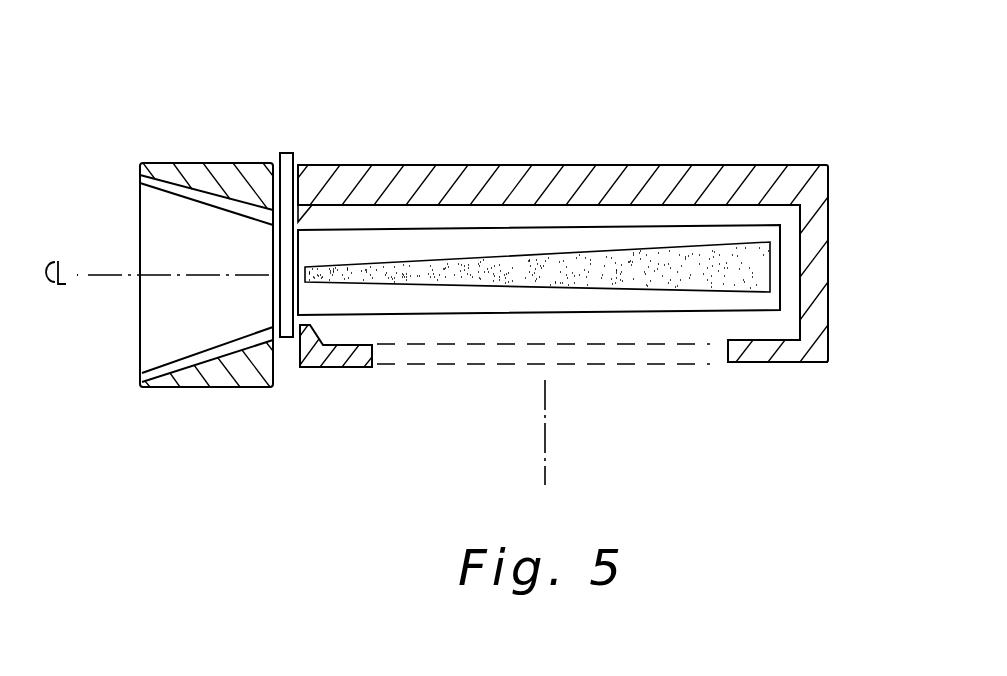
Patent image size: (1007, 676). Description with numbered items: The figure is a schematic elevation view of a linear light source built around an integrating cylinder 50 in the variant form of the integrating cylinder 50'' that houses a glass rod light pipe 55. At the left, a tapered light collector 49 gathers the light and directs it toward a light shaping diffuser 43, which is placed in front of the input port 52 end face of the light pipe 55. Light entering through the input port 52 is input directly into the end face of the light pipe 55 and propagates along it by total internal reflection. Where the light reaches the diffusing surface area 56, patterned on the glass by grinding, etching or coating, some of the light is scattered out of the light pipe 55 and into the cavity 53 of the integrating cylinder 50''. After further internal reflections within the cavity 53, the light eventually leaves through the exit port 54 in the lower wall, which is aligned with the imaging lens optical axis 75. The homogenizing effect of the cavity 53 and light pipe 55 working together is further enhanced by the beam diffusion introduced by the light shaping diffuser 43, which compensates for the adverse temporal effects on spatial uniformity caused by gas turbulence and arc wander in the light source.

The light shaping diffuser 43 is at (291, 152).
The tapered light collector 49 is at (205, 195).
The integrating cylinder 50 is at (573, 208).
The integrating cylinder 50'' is at (570, 220).
The input port 52 is at (310, 222).
The cavity 53 is at (777, 325).
The exit port 54 is at (663, 363).
The light pipe 55 is at (548, 230).
The diffusing surface area 56 is at (672, 242).
The imaging lens optical axis 75 is at (545, 423).